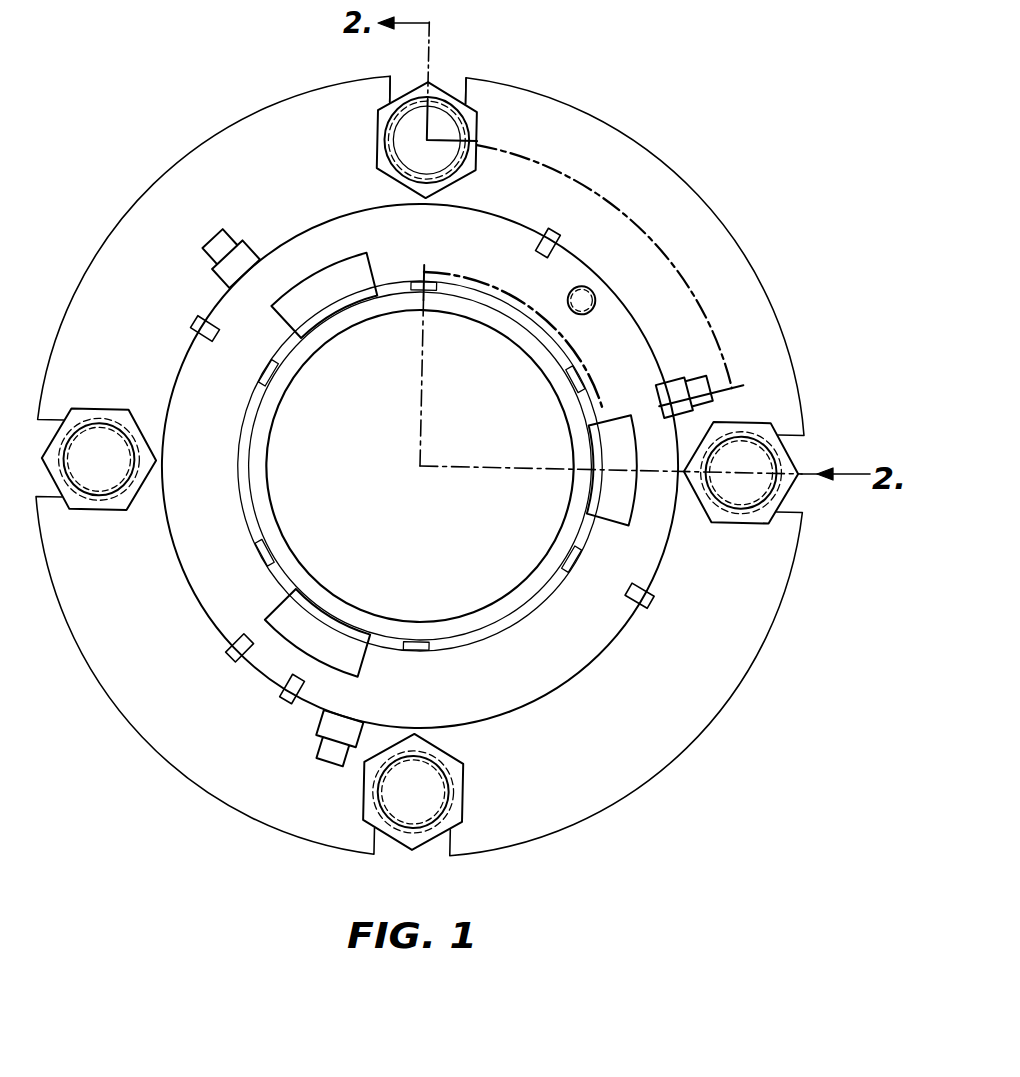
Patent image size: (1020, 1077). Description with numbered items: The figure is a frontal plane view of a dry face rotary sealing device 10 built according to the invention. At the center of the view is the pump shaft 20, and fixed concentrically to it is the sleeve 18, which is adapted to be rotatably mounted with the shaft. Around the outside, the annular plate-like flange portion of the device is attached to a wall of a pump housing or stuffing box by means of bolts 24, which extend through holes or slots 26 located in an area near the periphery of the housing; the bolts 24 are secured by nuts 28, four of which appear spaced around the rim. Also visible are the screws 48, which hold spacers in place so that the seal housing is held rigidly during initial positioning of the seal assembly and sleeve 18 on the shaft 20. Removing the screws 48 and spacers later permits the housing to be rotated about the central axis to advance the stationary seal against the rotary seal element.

The dry face sealing device 10 is at (700, 762).
The sleeve 18 is at (276, 505).
The pump shaft 20 is at (315, 446).
The bolts 24 is at (466, 138).
The holes or slots 26 is at (464, 82).
The nuts 28 is at (430, 86).
The screws 48 is at (676, 378).